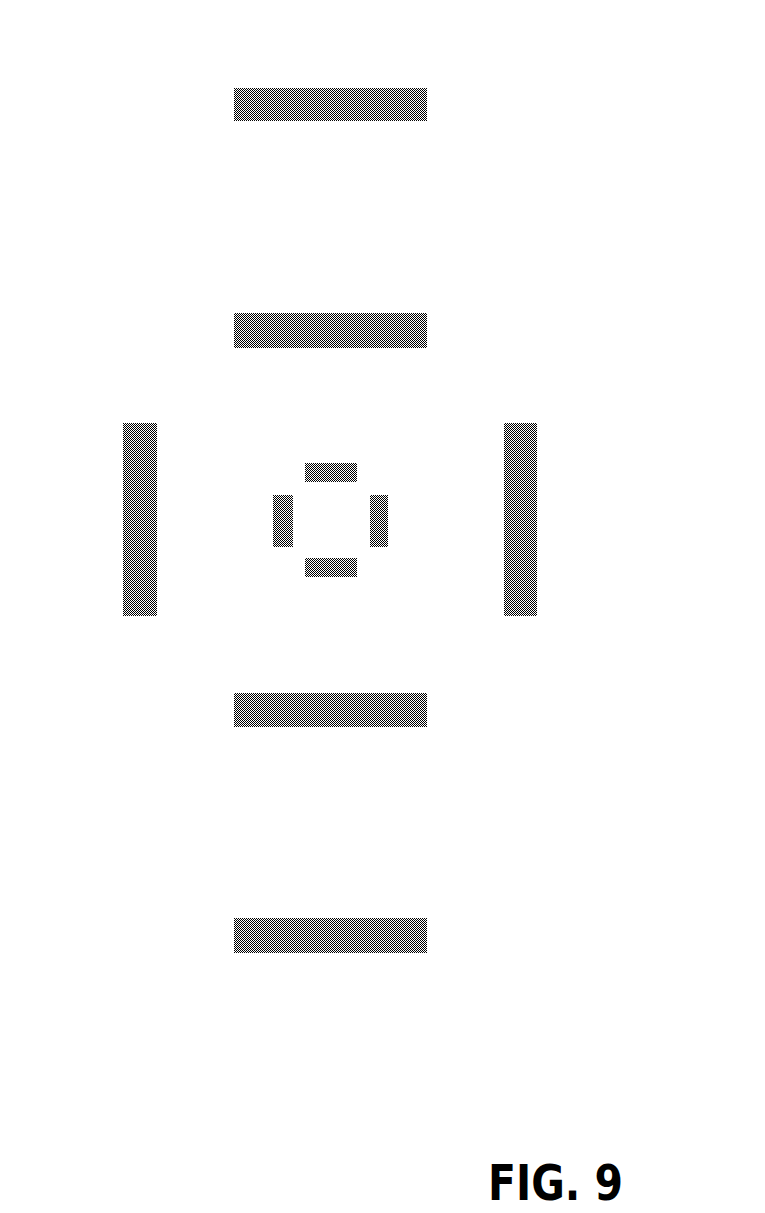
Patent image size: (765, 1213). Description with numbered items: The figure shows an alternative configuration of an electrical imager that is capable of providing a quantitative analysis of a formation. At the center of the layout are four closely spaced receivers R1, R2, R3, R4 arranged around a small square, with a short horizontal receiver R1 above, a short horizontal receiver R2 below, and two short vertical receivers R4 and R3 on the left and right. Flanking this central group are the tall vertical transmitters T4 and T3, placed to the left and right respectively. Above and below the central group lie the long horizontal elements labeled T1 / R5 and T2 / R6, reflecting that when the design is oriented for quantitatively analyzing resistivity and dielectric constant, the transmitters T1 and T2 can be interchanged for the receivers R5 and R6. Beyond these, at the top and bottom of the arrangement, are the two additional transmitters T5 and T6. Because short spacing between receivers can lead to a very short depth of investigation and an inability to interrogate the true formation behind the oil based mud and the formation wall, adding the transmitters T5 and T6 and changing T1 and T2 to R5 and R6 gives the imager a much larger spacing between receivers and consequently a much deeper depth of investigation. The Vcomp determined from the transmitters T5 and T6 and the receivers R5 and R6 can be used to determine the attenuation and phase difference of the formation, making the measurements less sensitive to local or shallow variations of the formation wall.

The transmitter T1 is at (330, 293).
The transmitter T2 is at (330, 742).
The transmitter T3 is at (567, 519).
The transmitter T4 is at (102, 519).
The additional transmitter T5 is at (330, 73).
The additional transmitter T6 is at (330, 967).
The receiver R1 is at (331, 444).
The receiver R2 is at (332, 598).
The receiver R3 is at (411, 523).
The receiver R4 is at (253, 523).
The receiver R5 is at (330, 293).
The receiver R6 is at (330, 742).